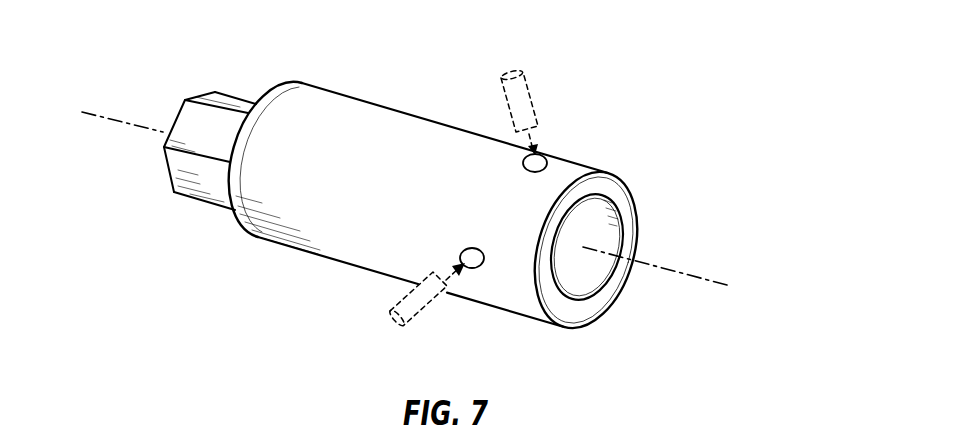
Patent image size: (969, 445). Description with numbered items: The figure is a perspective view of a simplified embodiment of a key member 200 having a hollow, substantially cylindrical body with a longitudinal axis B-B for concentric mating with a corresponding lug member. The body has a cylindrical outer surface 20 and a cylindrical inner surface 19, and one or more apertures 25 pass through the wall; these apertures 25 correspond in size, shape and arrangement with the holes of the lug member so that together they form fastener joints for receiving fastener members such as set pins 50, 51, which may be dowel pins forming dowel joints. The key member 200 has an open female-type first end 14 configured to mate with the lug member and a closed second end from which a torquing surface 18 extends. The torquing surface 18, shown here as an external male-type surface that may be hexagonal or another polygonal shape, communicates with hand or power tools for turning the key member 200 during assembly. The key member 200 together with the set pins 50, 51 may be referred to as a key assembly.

The key member 200 is at (607, 38).
The torquing surface 18 is at (203, 95).
The cylindrical outer surface 20 is at (333, 118).
The first end 14 is at (633, 197).
The cylindrical inner surface 19 is at (592, 265).
The apertures 25 is at (530, 172).
The set pin 50 is at (513, 72).
The set pin 51 is at (390, 315).